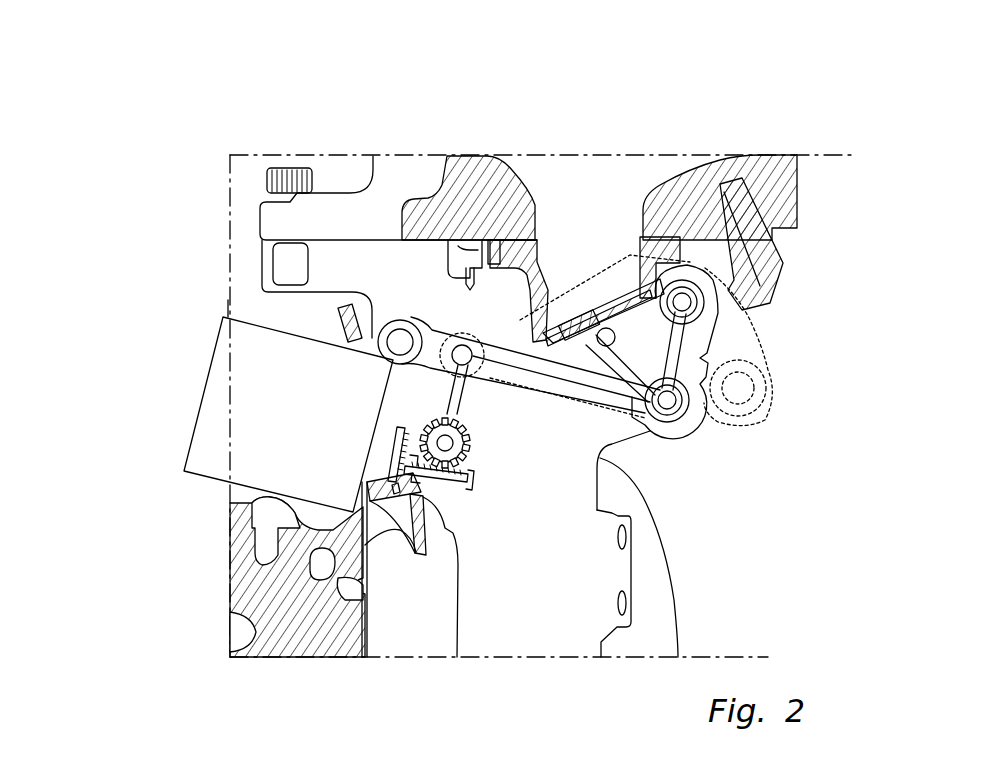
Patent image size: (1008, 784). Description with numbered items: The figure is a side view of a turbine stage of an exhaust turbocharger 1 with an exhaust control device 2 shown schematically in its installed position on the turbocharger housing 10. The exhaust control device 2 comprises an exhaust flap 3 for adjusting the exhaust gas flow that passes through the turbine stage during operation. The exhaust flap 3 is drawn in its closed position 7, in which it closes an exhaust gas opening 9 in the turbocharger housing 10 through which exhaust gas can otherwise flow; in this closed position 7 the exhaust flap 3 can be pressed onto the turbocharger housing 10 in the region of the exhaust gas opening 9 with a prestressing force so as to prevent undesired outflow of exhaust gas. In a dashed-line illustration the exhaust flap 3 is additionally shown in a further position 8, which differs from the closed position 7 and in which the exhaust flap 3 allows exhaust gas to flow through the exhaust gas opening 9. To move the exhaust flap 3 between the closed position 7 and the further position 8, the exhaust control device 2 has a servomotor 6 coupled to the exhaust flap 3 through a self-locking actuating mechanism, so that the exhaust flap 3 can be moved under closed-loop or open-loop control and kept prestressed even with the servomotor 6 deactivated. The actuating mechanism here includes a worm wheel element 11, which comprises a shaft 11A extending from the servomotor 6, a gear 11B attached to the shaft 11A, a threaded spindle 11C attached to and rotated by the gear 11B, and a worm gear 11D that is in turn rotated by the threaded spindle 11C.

The exhaust turbocharger 1 is at (308, 92).
The exhaust control device 2 is at (738, 460).
The exhaust flap 3 is at (702, 352).
The servomotor 6 is at (222, 388).
The closed position 7 is at (588, 313).
The further position 8 is at (572, 332).
The exhaust gas opening 9 is at (554, 352).
The turbocharger housing 10 is at (698, 175).
The worm wheel element 11 is at (468, 482).
The shaft 11A is at (390, 437).
The gear 11B is at (400, 453).
The threaded spindle 11C is at (470, 478).
The worm gear 11D is at (478, 436).